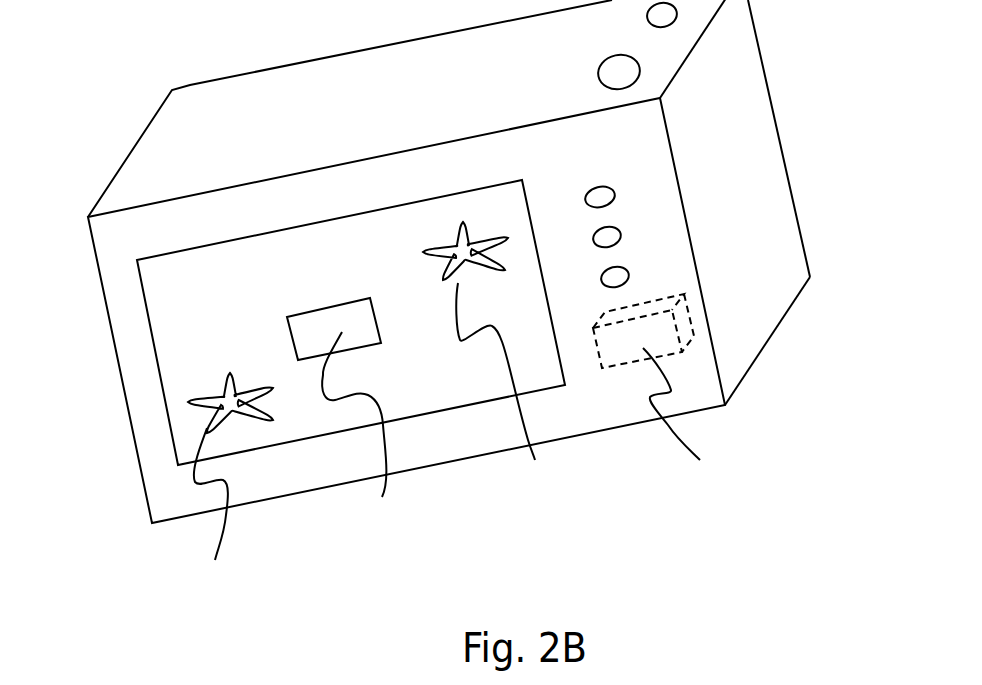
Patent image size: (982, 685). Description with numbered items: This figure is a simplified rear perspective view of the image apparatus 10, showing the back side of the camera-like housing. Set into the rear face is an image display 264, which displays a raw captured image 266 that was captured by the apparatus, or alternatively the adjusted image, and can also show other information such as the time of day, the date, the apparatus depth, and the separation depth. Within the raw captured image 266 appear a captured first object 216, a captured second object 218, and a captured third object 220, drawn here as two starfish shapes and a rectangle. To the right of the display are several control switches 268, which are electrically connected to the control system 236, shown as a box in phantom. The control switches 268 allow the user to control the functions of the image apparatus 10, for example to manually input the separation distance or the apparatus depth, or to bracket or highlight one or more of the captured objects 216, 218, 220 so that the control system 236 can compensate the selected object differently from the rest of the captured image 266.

The image apparatus 10 is at (187, 83).
The image display 264 is at (159, 312).
The raw captured image 266 is at (201, 423).
The control switches 268 is at (633, 272).
The captured first object 216 is at (222, 522).
The captured second object 218 is at (352, 421).
The captured third object 220 is at (498, 363).
The control system 236 is at (675, 396).